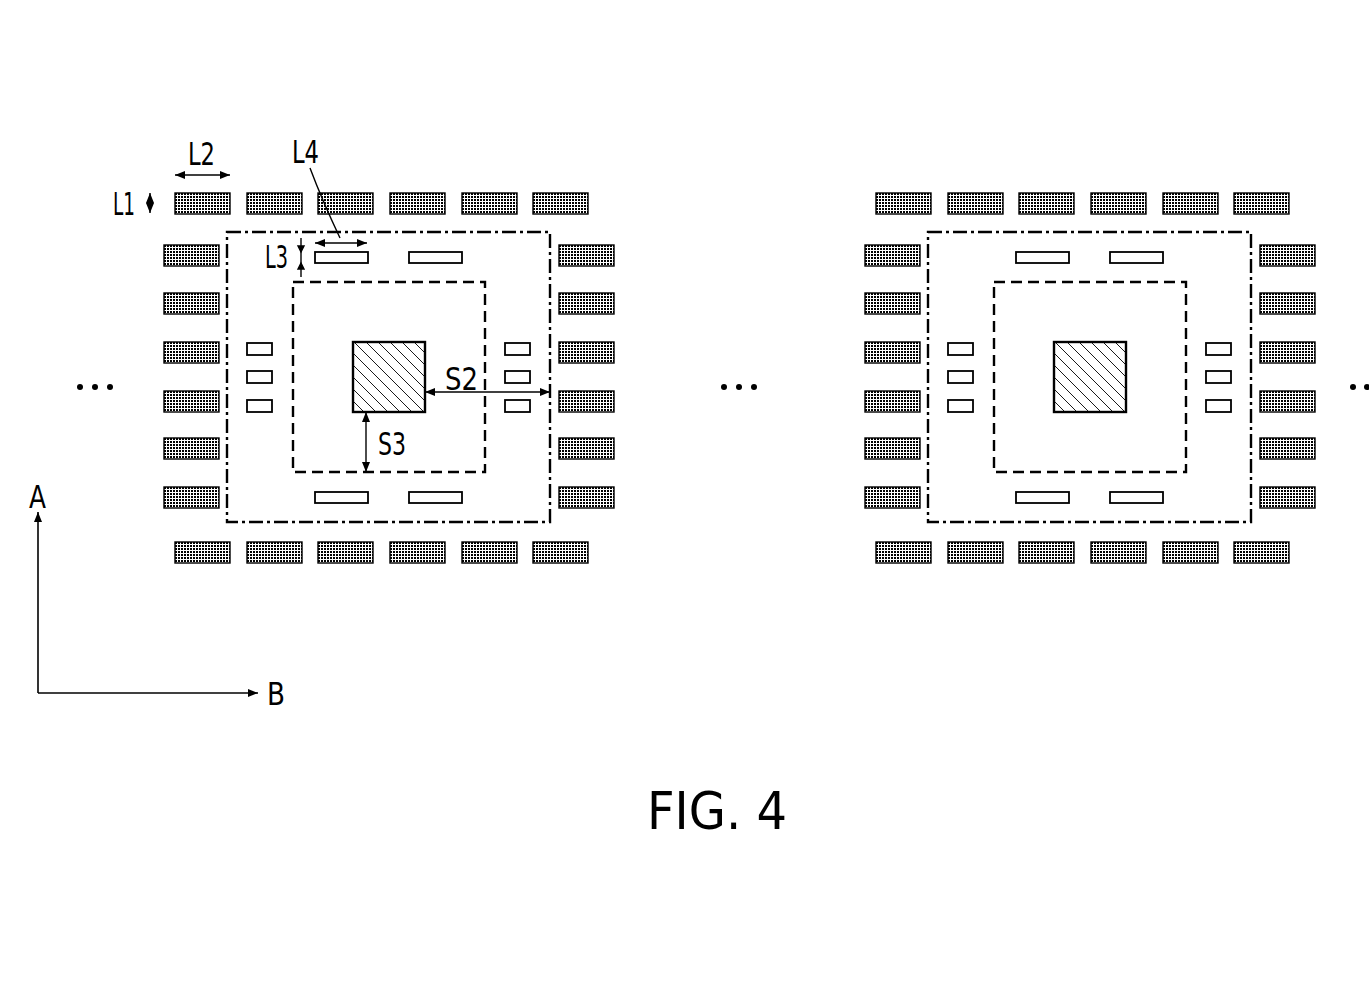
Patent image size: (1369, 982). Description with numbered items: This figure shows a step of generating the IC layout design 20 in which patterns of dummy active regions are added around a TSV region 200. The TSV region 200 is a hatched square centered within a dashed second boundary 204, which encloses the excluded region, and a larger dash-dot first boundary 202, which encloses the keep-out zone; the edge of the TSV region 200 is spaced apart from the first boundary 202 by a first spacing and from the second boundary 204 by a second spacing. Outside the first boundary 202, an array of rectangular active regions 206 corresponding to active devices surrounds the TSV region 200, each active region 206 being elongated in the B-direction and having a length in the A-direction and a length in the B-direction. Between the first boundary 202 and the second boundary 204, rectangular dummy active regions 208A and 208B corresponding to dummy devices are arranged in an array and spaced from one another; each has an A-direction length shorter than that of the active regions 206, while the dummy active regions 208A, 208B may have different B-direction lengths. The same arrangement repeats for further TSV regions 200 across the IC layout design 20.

The IC layout design 20 is at (1368, 83).
The TSV region 200 is at (402, 363).
The first boundary 202 is at (383, 523).
The second boundary 204 is at (443, 473).
The active regions 206 is at (565, 200).
The dummy active region 208A is at (447, 257).
The dummy active region 208B is at (258, 348).